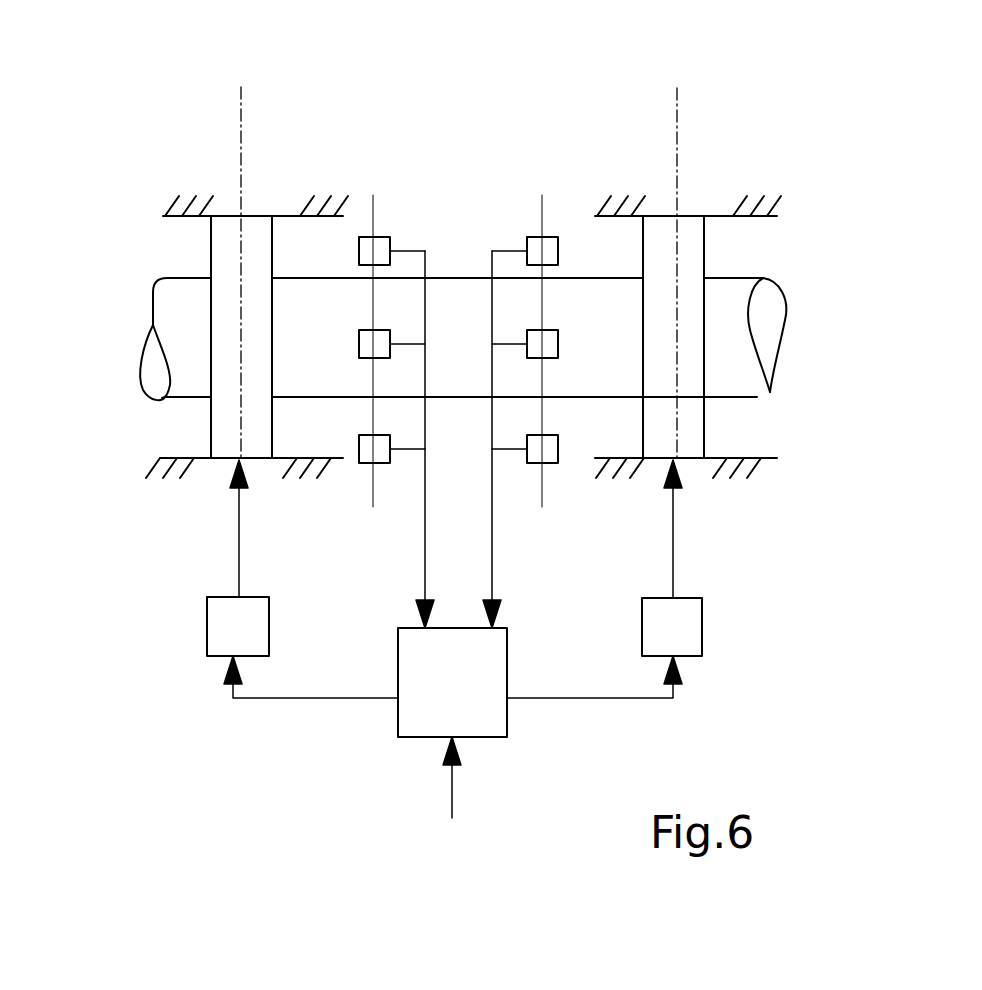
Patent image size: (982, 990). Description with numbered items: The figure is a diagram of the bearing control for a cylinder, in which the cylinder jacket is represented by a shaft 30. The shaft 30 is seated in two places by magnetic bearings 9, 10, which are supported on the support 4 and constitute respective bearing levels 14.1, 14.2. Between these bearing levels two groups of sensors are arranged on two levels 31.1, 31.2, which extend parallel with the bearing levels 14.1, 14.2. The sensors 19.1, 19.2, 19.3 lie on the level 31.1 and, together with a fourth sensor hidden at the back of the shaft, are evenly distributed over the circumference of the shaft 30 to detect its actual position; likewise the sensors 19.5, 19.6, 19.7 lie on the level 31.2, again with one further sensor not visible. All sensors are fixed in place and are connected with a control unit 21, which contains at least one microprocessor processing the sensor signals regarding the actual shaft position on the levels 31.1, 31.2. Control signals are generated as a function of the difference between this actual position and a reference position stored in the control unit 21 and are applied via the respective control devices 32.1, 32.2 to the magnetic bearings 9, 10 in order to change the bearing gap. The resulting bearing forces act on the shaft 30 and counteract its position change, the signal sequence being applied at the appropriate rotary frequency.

The support 4 is at (178, 472).
The magnetic bearing 9 is at (223, 247).
The magnetic bearing 10 is at (692, 237).
The bearing level 14.1 is at (242, 117).
The bearing level 14.2 is at (677, 140).
The sensor 19.1 is at (369, 246).
The sensor 19.2 is at (359, 343).
The sensor 19.3 is at (375, 453).
The sensor 19.5 is at (550, 243).
The sensor 19.6 is at (548, 344).
The sensor 19.7 is at (548, 455).
The control unit 21 is at (420, 717).
The shaft 30 is at (188, 326).
The level 31.1 is at (374, 203).
The level 31.2 is at (547, 196).
The control device 32.1 is at (243, 618).
The control device 32.2 is at (685, 628).